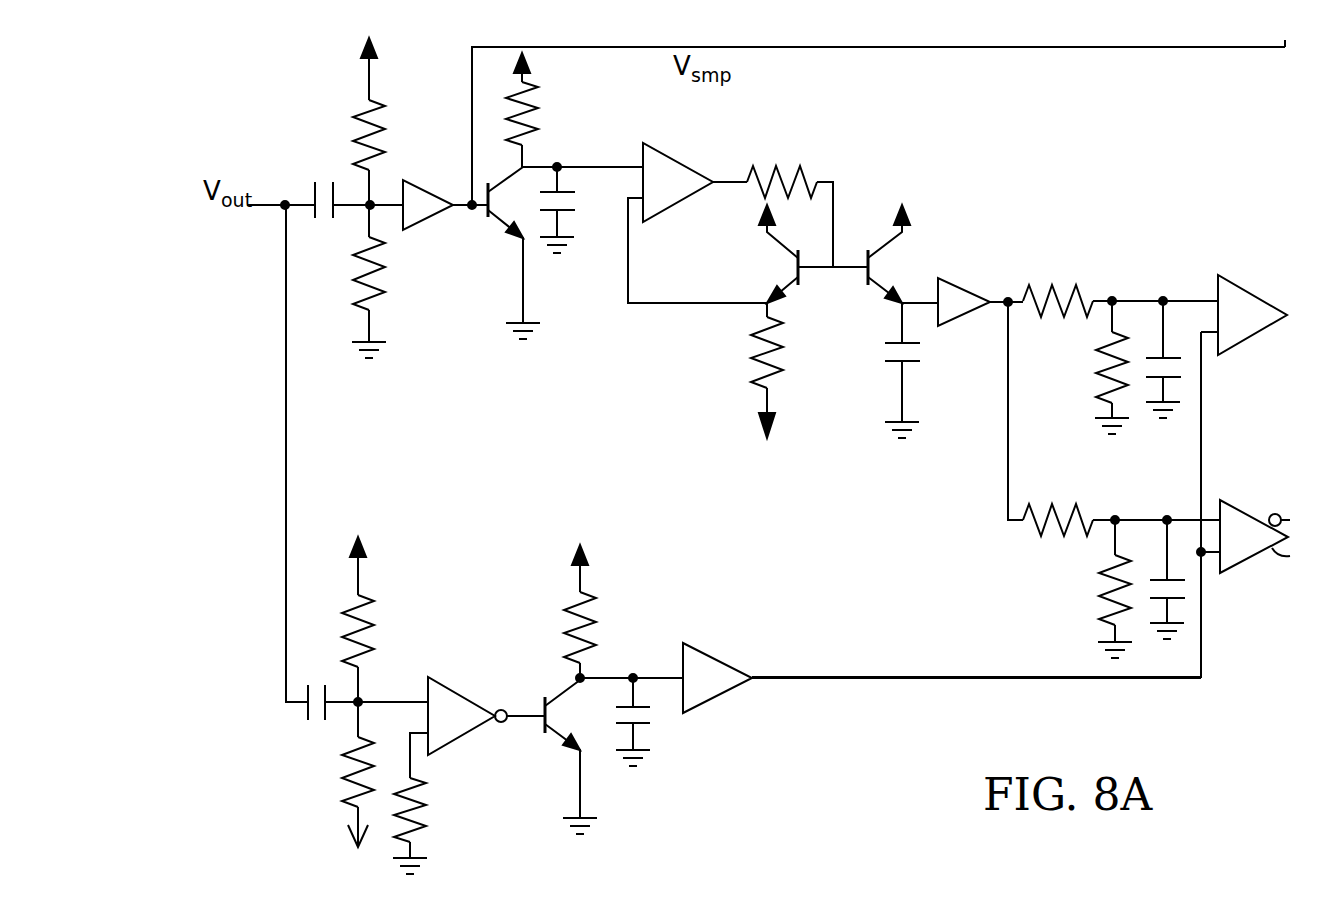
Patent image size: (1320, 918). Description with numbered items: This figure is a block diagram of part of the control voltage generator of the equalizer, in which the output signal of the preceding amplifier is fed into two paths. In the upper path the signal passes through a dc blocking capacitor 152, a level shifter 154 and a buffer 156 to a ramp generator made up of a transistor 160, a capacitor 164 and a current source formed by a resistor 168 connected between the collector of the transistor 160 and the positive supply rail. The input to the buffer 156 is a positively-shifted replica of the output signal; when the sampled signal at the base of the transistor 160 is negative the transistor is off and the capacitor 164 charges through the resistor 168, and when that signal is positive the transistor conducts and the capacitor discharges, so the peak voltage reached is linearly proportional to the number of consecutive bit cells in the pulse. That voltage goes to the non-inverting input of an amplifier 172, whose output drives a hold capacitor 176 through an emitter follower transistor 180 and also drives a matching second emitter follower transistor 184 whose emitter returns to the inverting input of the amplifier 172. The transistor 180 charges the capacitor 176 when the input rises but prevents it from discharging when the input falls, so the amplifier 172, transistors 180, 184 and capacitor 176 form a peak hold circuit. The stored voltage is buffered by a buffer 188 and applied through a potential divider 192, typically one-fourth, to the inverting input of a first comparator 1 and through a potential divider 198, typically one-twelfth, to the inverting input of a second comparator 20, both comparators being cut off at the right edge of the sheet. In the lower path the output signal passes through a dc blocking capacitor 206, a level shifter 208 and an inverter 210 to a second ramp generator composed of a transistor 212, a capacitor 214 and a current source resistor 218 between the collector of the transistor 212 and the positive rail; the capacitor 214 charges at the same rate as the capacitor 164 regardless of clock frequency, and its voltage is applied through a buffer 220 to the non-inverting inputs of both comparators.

The operational amplifier 1 is at (1253, 297).
The comparator 20 is at (1235, 512).
The dc blocking capacitor 152 is at (315, 183).
The level shifter 154 is at (325, 97).
The buffer 156 is at (432, 218).
The transistor 160 is at (497, 220).
The capacitor 164 is at (577, 197).
The resistor 168 is at (540, 113).
The amplifier 172 is at (682, 158).
The hold capacitor 176 is at (878, 360).
The emitter follower transistor 180 is at (887, 267).
The second emitter follower transistor 184 is at (783, 263).
The buffer 188 is at (957, 280).
The potential divider 192 is at (1113, 295).
The potential divider 198 is at (1118, 515).
The dc blocking capacitor 206 is at (303, 718).
The level shifter 208 is at (315, 763).
The inverter 210 is at (460, 700).
The transistor 212 is at (555, 733).
The capacitor 214 is at (652, 712).
The resistor 218 is at (595, 627).
The buffer 220 is at (718, 658).